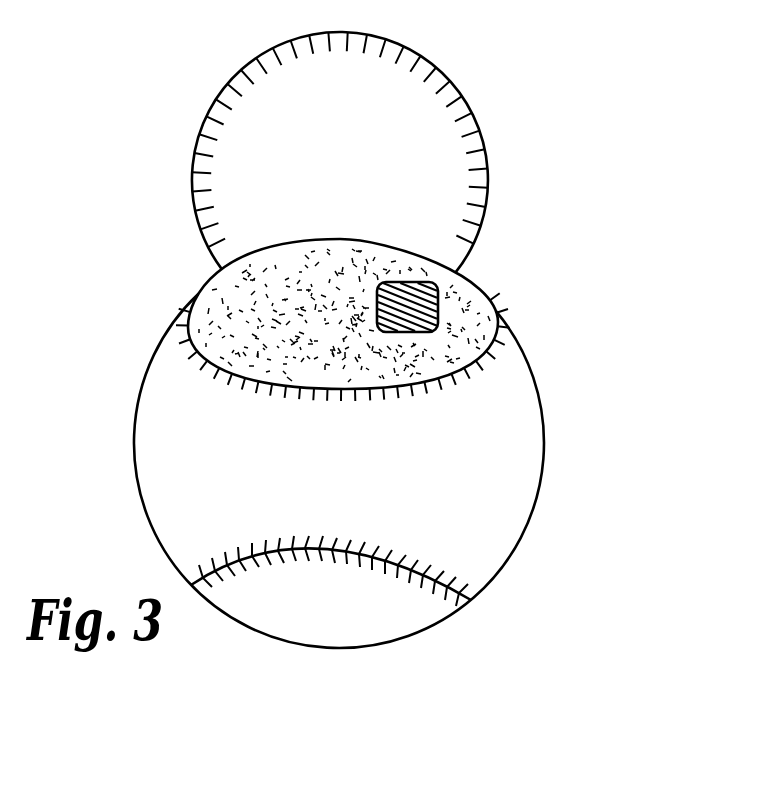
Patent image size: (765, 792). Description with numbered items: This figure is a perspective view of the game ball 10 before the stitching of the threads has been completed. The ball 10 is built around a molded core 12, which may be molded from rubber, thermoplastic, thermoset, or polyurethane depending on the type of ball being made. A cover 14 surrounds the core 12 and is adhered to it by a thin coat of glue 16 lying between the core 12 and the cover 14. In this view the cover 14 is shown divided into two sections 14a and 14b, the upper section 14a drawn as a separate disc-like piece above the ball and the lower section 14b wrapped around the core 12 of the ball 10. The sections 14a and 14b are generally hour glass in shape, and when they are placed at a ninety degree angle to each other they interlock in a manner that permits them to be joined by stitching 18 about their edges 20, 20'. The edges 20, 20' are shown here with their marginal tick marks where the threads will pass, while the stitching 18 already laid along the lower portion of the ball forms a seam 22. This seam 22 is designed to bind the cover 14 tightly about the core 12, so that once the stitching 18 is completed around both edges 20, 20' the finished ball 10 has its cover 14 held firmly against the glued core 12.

The game ball 10 is at (543, 477).
The molded core 12 is at (437, 292).
The cover 14 is at (415, 153).
The cover section 14a is at (352, 161).
The cover section 14b is at (360, 486).
The glue 16 is at (467, 293).
The stitching 18 is at (460, 588).
The edge 20 is at (340, 123).
The edge 20' is at (397, 349).
The seam 22 is at (407, 563).